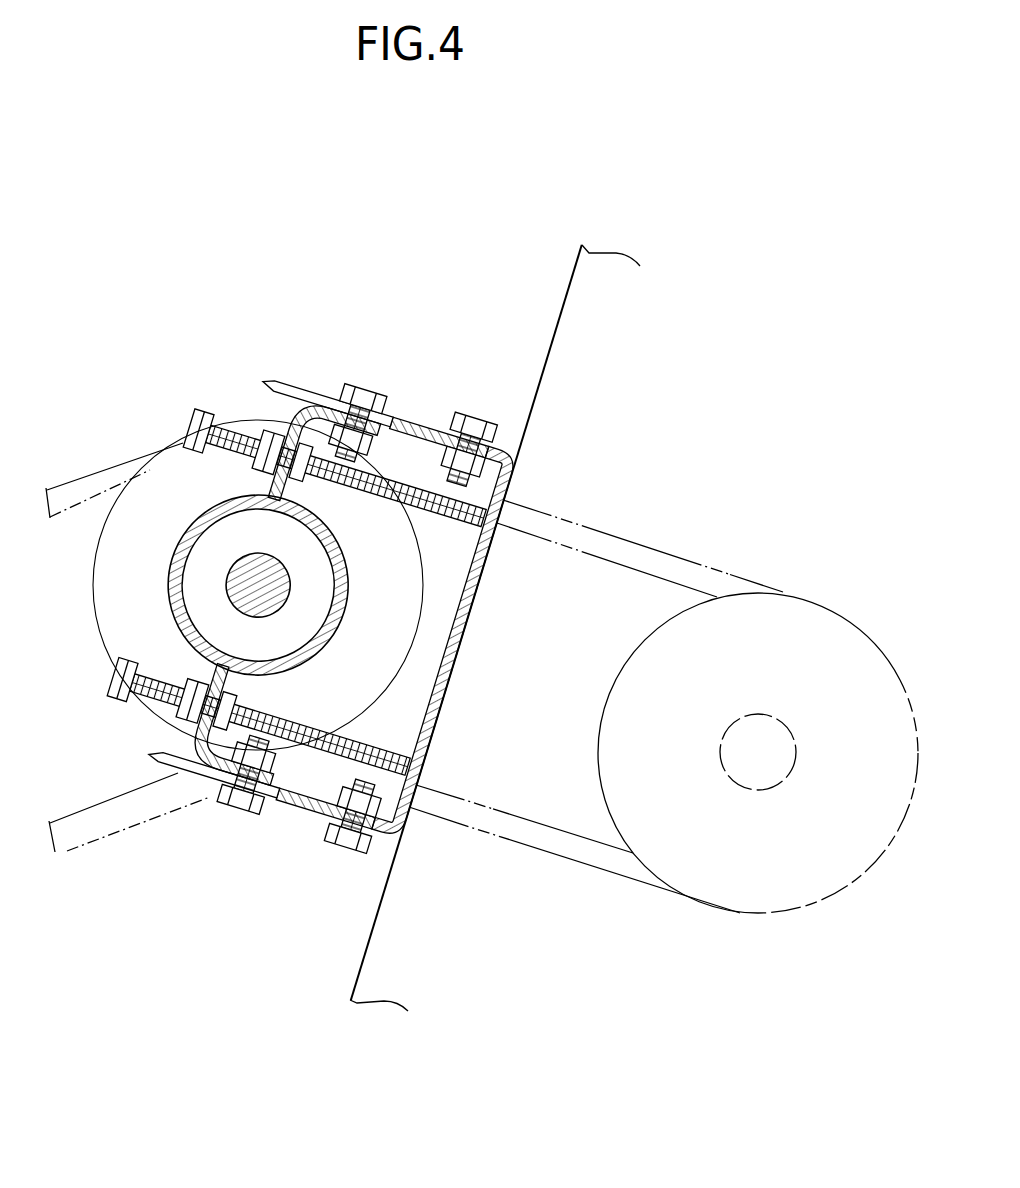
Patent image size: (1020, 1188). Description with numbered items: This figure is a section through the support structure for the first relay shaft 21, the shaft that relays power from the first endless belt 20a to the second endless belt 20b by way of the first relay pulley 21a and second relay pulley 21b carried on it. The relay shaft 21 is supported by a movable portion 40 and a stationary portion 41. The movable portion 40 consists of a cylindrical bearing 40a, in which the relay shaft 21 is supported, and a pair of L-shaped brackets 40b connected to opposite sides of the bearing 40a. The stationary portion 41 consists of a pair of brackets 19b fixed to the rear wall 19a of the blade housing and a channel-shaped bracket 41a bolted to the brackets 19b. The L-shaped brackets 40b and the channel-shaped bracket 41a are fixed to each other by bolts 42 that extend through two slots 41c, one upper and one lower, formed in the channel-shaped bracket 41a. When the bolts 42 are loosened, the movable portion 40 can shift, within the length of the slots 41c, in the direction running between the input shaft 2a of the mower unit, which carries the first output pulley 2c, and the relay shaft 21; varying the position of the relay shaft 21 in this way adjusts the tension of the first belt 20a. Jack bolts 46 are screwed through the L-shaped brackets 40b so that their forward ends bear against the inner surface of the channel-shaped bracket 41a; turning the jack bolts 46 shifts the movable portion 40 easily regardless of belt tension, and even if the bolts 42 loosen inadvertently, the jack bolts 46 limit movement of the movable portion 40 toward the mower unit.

The fixed shaft 2a is at (760, 792).
The first output pulley 2c is at (758, 915).
The rear wall 19a is at (555, 333).
The brackets 19b is at (436, 420).
The first endless belt 20a is at (655, 552).
The second endless belt 20b is at (52, 830).
The first relay shaft 21 is at (227, 583).
The first relay pulley 21a is at (236, 558).
The second relay pulley 21b is at (150, 470).
The movable portion 40 is at (247, 555).
The cylindrical bearing 40a is at (347, 607).
The L-shaped brackets 40b is at (296, 436).
The stationary portion 41 is at (436, 560).
The channel-shaped bracket 41a is at (465, 575).
The slots 41c is at (325, 400).
The bolts 42 is at (363, 383).
The jack bolts 46 is at (200, 410).